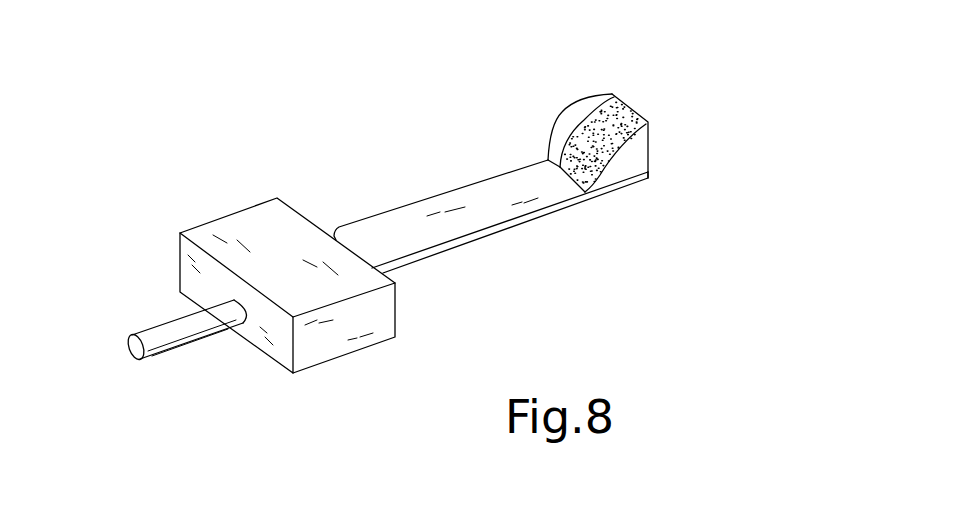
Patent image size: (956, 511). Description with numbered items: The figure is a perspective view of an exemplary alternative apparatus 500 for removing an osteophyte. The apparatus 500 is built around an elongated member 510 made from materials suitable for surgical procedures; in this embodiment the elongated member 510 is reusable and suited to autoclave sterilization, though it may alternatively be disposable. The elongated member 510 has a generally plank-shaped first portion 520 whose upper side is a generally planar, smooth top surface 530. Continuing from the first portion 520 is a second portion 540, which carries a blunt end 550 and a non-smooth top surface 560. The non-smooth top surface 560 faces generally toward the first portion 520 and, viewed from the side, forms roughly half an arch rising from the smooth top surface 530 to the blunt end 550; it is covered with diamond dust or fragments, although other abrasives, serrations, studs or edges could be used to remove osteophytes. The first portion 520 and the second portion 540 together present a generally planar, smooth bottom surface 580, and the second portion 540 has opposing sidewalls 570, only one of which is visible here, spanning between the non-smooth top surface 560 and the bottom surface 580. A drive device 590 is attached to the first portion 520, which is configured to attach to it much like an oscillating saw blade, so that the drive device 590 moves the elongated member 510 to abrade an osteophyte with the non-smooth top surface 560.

The apparatus for removing an osteophyte 500 is at (190, 85).
The elongated member 510 is at (397, 284).
The first portion 520 is at (460, 188).
The smooth top surface 530 is at (408, 254).
The second portion 540 is at (562, 113).
The blunt end 550 is at (688, 135).
The non-smooth top surface 560 is at (640, 113).
The opposing sidewalls 570 is at (647, 171).
The bottom surface 580 is at (503, 226).
The drive device 590 is at (213, 227).